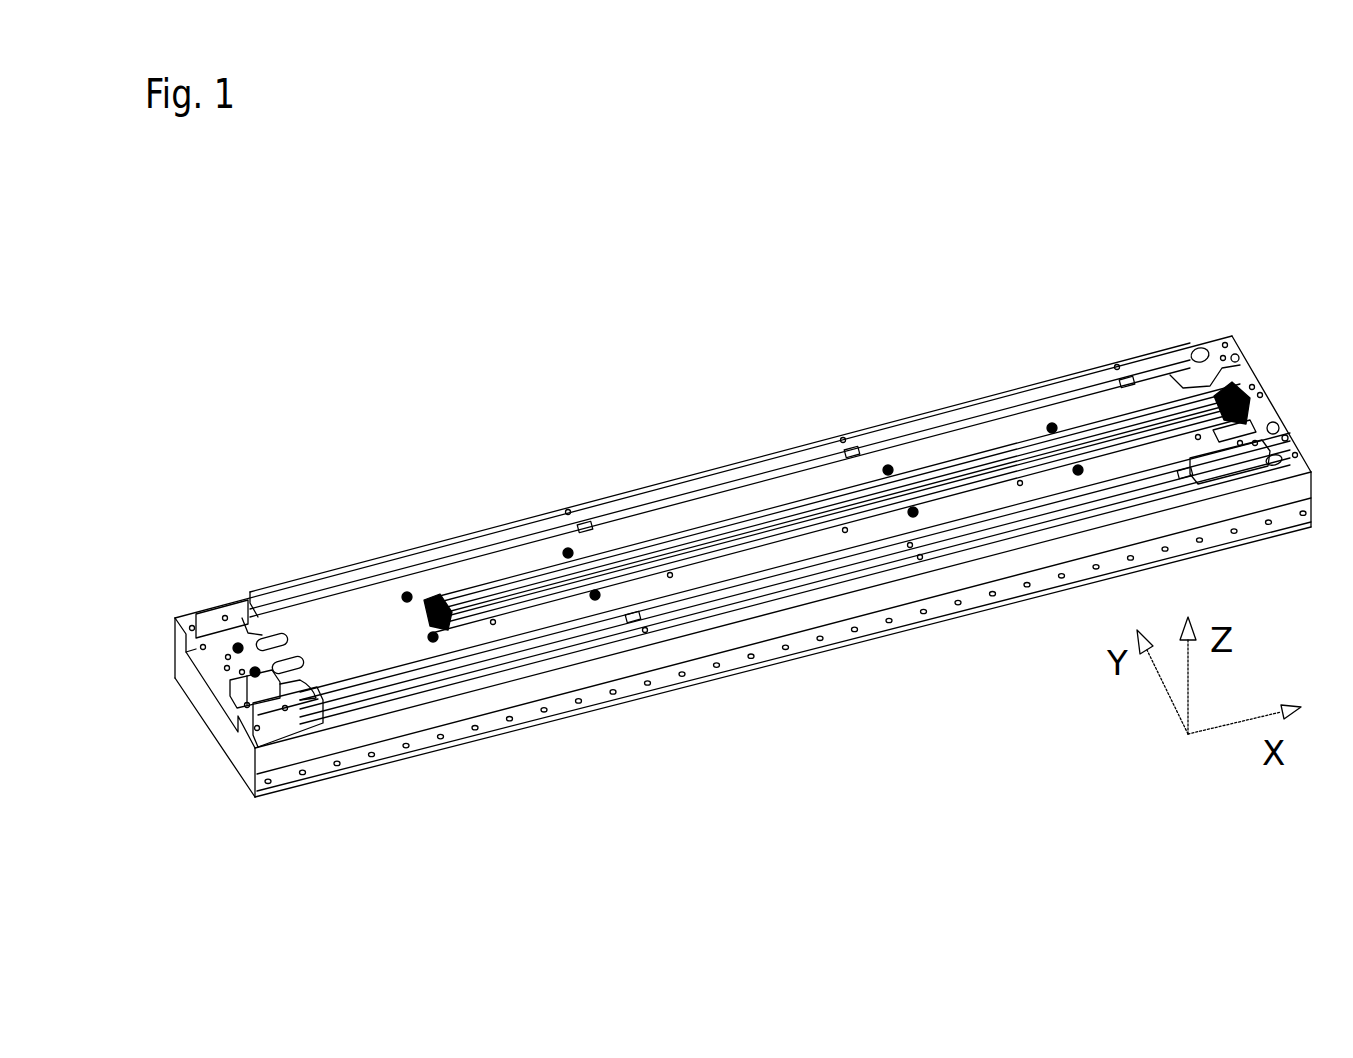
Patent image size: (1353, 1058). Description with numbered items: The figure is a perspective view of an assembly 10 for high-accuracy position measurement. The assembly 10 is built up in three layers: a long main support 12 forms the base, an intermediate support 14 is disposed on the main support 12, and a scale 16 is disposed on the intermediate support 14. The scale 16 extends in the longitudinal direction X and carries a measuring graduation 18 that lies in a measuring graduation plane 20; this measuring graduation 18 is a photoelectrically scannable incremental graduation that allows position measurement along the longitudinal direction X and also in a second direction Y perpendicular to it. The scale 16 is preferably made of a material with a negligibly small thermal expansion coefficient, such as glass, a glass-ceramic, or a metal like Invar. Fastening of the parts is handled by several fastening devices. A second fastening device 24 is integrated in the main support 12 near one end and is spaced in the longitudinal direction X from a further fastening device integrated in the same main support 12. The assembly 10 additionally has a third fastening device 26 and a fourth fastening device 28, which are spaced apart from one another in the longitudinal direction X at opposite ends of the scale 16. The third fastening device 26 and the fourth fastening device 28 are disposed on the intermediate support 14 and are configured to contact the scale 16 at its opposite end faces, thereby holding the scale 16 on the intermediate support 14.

The assembly 10 is at (238, 472).
The main support 12 is at (345, 735).
The intermediate support 14 is at (353, 610).
The scale 16 is at (568, 597).
The measuring graduation 18 is at (836, 500).
The measuring graduation plane 20 is at (678, 560).
The second fastening device 24 is at (233, 707).
The third fastening device 26 is at (1247, 365).
The fourth fastening device 28 is at (459, 525).